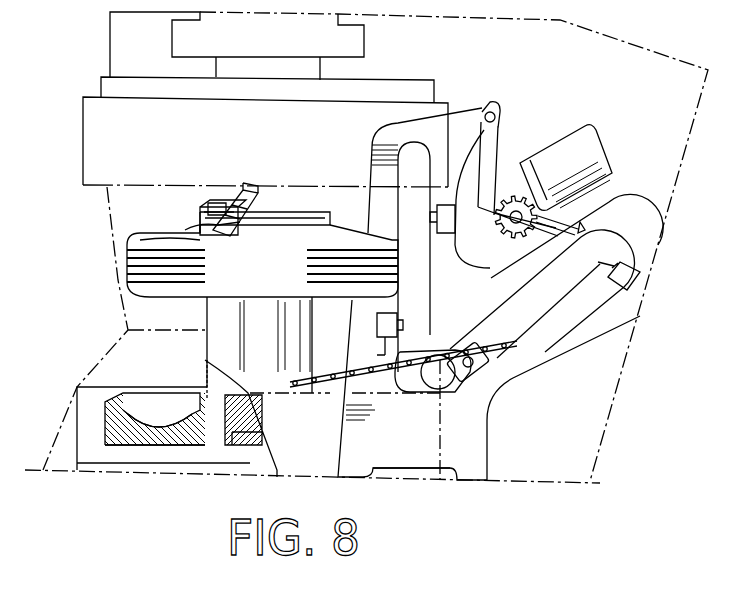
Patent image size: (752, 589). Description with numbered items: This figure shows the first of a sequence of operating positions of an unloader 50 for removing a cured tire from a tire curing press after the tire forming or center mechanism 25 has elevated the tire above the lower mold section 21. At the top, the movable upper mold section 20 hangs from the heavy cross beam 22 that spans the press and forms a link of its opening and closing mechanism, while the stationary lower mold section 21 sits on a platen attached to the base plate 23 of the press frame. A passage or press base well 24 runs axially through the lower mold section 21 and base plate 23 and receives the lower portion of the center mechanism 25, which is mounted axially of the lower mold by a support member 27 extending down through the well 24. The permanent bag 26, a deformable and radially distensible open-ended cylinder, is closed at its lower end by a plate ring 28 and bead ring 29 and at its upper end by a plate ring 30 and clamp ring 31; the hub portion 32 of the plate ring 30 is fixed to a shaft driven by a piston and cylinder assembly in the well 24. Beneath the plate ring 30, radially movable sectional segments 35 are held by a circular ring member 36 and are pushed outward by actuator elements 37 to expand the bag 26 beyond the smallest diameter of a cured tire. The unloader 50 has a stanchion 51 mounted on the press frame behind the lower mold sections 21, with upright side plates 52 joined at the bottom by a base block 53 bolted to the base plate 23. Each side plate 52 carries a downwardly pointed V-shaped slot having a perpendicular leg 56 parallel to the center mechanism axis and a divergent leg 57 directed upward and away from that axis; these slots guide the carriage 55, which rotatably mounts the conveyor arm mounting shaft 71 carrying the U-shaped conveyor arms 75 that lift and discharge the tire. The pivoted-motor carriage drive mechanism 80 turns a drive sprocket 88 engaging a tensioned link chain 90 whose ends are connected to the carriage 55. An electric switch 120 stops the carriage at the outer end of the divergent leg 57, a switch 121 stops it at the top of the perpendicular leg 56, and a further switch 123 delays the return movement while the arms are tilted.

The upper mold section 20 is at (115, 127).
The lower mold section 21 is at (113, 425).
The cross beam 22 is at (195, 36).
The base plate 23 is at (62, 447).
The press base well 24 is at (238, 422).
The center mechanism 25 is at (299, 177).
The permanent bag 26 is at (227, 342).
The support member 27 is at (262, 437).
The plate ring 28 is at (213, 441).
The bead ring 29 is at (203, 410).
The plate ring 30 is at (218, 213).
The clamp ring 31 is at (213, 209).
The hub portion 32 is at (240, 194).
The sectional segments 35 is at (175, 232).
The circular ring member 36 is at (229, 233).
The actuator elements 37 is at (262, 197).
The unloader 50 is at (472, 92).
The stanchion 51 is at (482, 410).
The side plate 52 is at (549, 343).
The base block 53 is at (421, 473).
The carriage 55 is at (441, 377).
The perpendicular leg 56 is at (437, 287).
The divergent leg 57 is at (556, 296).
The conveyor arm mounting shaft 71 is at (474, 361).
The conveyor arms 75 is at (315, 368).
The carriage drive mechanism 80 is at (593, 147).
The drive sprocket 88 is at (532, 202).
The link chain 90 is at (565, 225).
The electric switch 120 is at (633, 280).
The electric switch 121 is at (452, 238).
The switch 123 is at (377, 324).